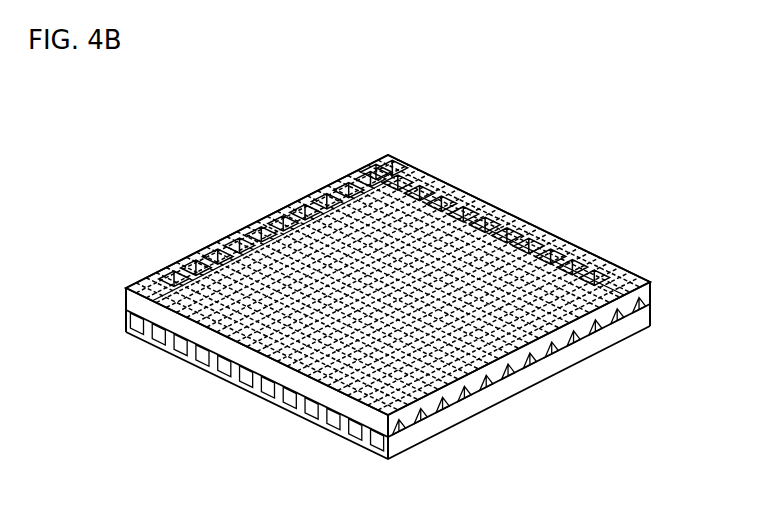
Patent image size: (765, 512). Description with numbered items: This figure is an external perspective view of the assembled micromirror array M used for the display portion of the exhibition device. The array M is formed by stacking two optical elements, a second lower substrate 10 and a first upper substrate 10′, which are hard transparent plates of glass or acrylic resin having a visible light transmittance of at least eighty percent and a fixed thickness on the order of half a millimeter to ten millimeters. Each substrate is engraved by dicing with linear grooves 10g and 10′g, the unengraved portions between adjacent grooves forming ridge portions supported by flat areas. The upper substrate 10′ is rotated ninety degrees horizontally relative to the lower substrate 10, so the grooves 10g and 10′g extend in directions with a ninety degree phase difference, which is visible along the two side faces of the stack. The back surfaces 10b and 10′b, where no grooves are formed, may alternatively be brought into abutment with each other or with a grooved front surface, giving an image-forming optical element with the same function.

The micromirror array M is at (263, 213).
The second lower substrate 10 is at (124, 322).
The first substrate 10′ is at (124, 296).
The back surface of substrate 10 10b is at (536, 403).
The back surface of substrate 10′ 10′b is at (567, 271).
The linear grooves of substrate 10 10g is at (267, 388).
The linear grooves of substrate 10′ 10′g is at (468, 393).